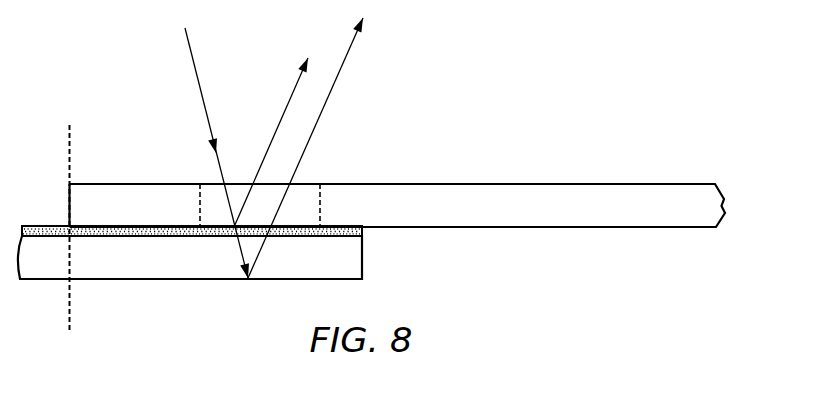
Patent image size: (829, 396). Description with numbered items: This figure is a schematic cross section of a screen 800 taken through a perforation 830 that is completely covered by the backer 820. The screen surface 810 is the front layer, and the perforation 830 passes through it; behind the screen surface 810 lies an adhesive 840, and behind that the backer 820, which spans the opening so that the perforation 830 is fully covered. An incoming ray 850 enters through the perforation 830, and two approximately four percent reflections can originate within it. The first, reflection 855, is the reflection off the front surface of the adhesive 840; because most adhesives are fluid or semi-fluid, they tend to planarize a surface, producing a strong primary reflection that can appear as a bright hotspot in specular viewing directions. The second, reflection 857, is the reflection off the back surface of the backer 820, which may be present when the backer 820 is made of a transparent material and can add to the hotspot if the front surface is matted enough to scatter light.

The screen 800 is at (521, 118).
The screen surface 810 is at (583, 218).
The backer 820 is at (142, 268).
The perforation 830 is at (307, 197).
The adhesive 840 is at (363, 232).
The incoming ray (a) 850 is at (192, 63).
The reflection (b) 855 is at (283, 110).
The reflection (c) 857 is at (337, 86).